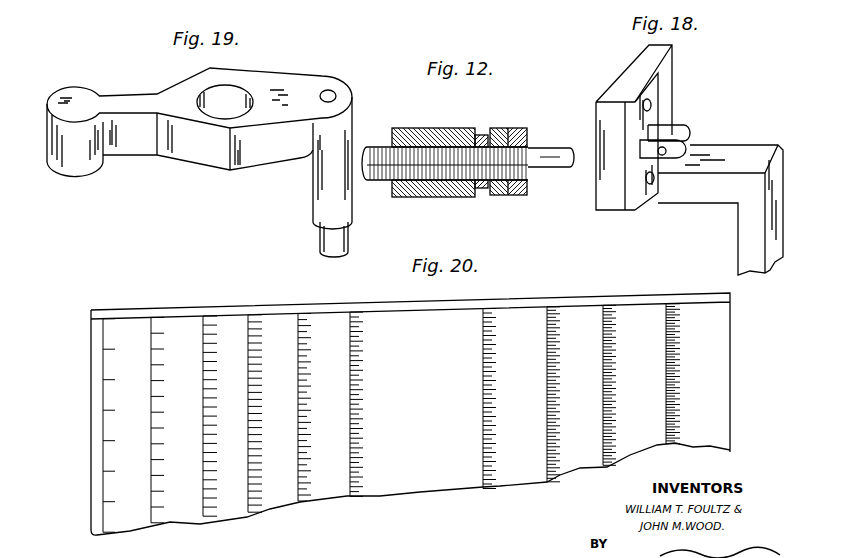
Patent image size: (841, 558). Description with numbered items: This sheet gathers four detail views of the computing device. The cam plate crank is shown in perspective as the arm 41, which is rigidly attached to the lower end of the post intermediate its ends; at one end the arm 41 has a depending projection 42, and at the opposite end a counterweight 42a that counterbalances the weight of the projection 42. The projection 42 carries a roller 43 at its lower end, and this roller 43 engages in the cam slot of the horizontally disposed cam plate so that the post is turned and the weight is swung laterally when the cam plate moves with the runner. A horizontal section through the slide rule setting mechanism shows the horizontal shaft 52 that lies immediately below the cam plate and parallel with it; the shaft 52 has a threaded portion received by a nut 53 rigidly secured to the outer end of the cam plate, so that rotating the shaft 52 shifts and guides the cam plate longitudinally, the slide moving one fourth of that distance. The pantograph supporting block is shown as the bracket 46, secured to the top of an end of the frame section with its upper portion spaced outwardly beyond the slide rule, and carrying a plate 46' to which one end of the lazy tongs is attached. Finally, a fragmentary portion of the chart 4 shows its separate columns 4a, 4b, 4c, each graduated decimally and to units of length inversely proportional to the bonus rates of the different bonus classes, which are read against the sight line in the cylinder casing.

In FIG. 19, the arm 41 is at (275, 78).
In FIG. 19, the depending projection 42 is at (320, 195).
In FIG. 19, the counterweight 42a is at (90, 167).
In FIG. 19, the roller 43 is at (318, 238).
In FIG. 12, the horizontal shaft 52 is at (388, 182).
In FIG. 12, the nut 53 is at (418, 192).
In FIG. 18, the bracket 46 is at (720, 210).
In FIG. 18, the bracket mounting plate 46' is at (658, 127).
In FIG. 20, the chart 4 is at (362, 312).
In FIG. 20, the chart column 4a is at (103, 322).
In FIG. 20, the chart column 4b is at (152, 321).
In FIG. 20, the chart column 4c is at (204, 319).